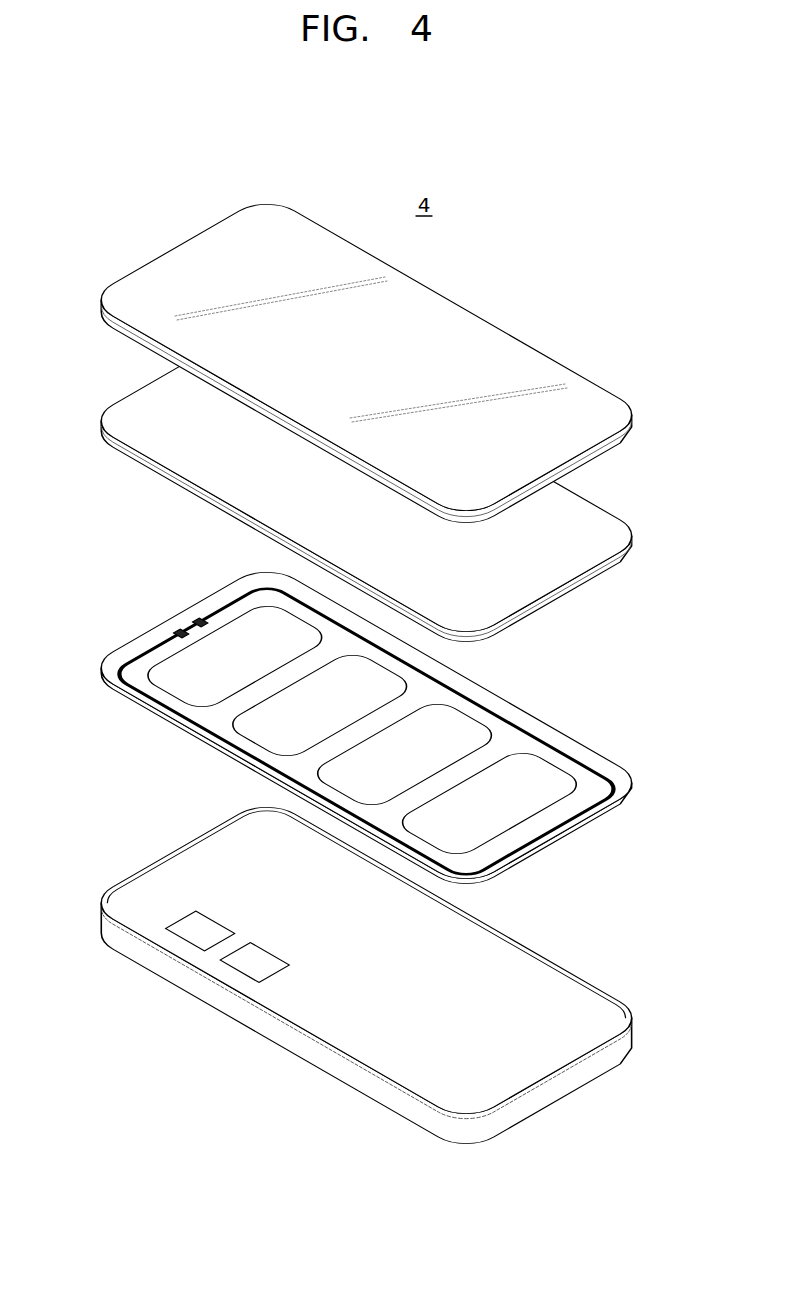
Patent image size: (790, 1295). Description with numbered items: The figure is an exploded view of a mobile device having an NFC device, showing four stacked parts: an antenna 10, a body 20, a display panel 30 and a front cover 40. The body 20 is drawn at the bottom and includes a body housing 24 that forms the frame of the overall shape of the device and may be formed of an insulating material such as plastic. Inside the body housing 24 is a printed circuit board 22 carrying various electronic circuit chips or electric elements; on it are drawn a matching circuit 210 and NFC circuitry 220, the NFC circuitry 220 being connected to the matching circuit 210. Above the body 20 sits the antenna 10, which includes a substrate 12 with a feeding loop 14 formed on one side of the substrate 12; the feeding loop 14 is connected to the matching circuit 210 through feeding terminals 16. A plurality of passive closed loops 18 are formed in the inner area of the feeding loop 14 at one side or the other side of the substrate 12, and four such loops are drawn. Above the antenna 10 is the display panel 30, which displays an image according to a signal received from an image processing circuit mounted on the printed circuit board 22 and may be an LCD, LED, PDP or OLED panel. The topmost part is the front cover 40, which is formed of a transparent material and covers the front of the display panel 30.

The antenna 10 is at (382, 728).
The substrate 12 is at (530, 722).
The feeding loop 14 is at (145, 655).
The feeding terminals 16 is at (180, 632).
The passive closed loops 18 is at (160, 703).
The body 20 is at (376, 975).
The printed circuit board 22 is at (572, 988).
The body housing 24 is at (595, 1062).
The display panel 30 is at (607, 523).
The front cover 40 is at (607, 400).
The matching circuit 210 is at (217, 918).
The NFC circuitry 220 is at (268, 953).